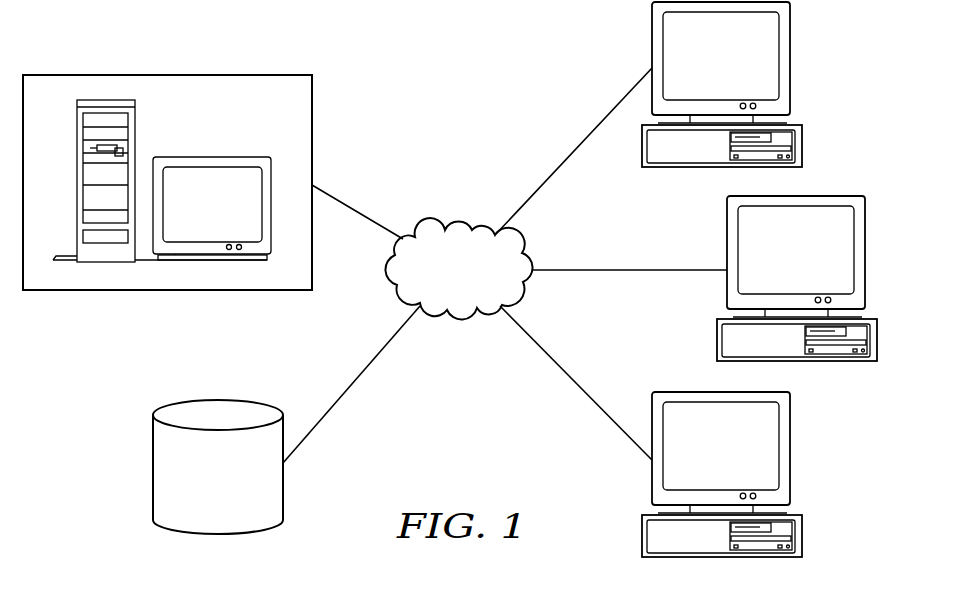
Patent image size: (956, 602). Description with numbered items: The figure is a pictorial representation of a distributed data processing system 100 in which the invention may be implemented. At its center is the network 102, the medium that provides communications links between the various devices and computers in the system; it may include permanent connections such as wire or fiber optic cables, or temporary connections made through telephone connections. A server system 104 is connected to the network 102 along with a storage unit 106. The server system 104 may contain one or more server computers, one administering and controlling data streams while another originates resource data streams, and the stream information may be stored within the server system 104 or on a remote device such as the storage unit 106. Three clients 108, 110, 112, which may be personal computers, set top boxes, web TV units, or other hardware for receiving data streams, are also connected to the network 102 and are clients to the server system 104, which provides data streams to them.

The distributed data processing system 100 is at (359, 52).
The network 102 is at (477, 300).
The server system 104 is at (230, 128).
The storage unit 106 is at (238, 504).
The client 108 is at (740, 67).
The client 110 is at (797, 291).
The client 112 is at (722, 487).